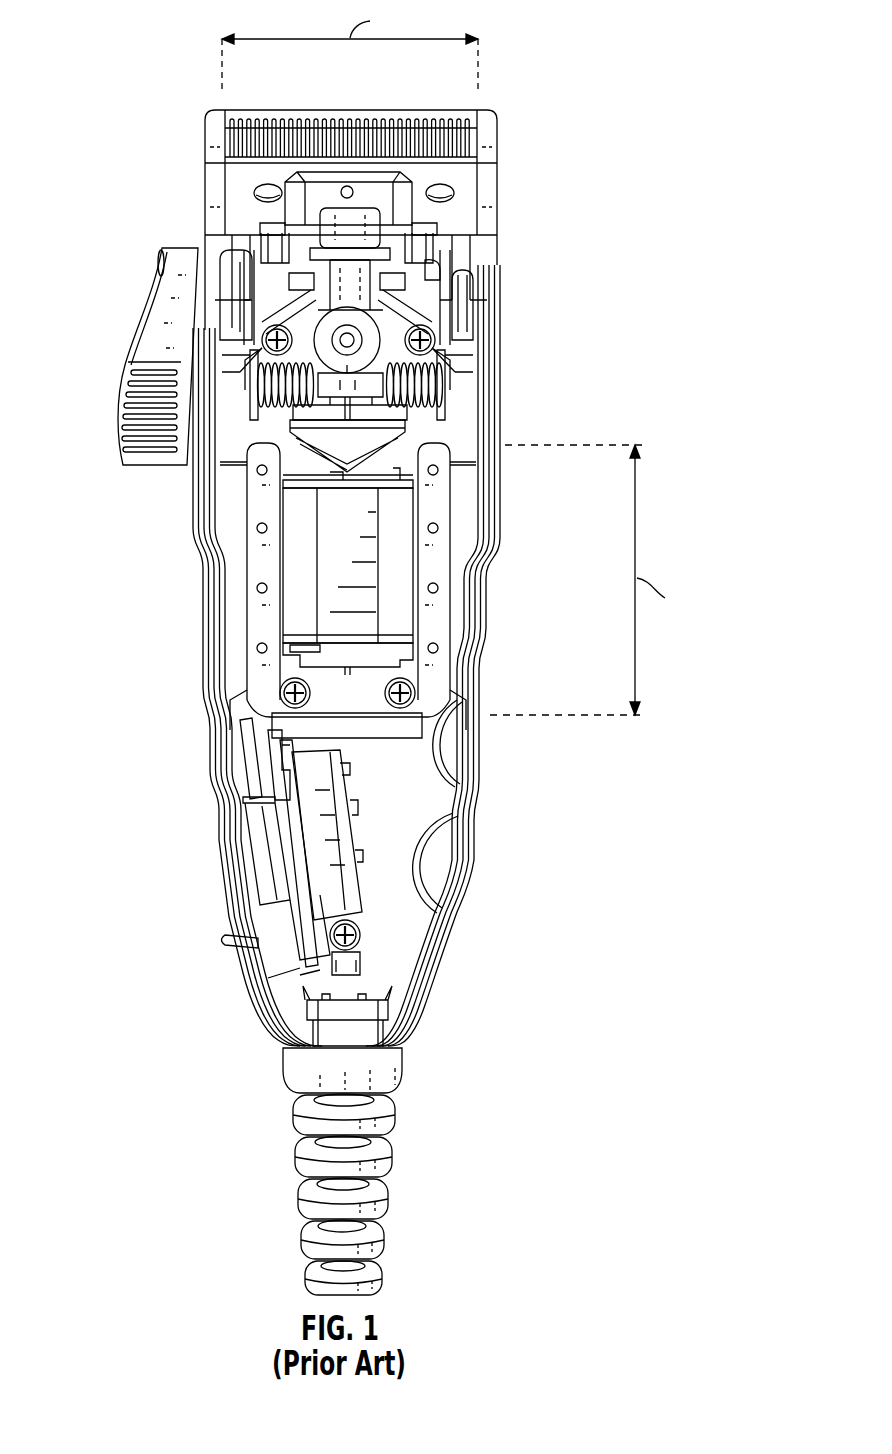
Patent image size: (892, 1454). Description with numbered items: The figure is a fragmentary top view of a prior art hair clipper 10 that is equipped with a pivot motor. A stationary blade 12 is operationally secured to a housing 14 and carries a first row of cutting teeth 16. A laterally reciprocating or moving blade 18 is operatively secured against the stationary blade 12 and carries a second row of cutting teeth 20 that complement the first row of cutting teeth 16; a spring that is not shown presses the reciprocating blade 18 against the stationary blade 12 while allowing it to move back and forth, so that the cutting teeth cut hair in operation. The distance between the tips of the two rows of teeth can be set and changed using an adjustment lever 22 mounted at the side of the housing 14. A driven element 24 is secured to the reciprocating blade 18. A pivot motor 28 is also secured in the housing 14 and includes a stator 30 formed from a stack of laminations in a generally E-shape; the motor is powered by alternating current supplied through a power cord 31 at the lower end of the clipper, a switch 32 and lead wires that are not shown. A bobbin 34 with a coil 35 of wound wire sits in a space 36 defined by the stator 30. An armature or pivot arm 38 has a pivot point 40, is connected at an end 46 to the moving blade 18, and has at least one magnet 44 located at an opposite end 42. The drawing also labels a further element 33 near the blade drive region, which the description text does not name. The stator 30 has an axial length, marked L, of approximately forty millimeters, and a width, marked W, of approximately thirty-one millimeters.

The hair clipper 10 is at (118, 585).
The stationary blade 12 is at (215, 173).
The housing 14 is at (470, 630).
The first row of cutting teeth 16 is at (268, 118).
The reciprocating blade 18 is at (395, 207).
The second row of cutting teeth 20 is at (400, 133).
The adjustment lever 22 is at (163, 313).
The driven element 24 is at (460, 272).
The pivot motor 28 is at (438, 646).
The stator 30 is at (253, 565).
The power cord 31 is at (300, 1073).
The switch 32 is at (310, 803).
The blade tension springs 33 is at (370, 380).
The bobbin 34 is at (302, 655).
The coil 35 is at (328, 578).
The space 36 is at (278, 478).
The pivot arm 38 is at (350, 292).
The pivot point 40 is at (347, 340).
The opposite end 42 is at (327, 437).
The magnet 44 is at (300, 448).
The end 46 is at (345, 277).